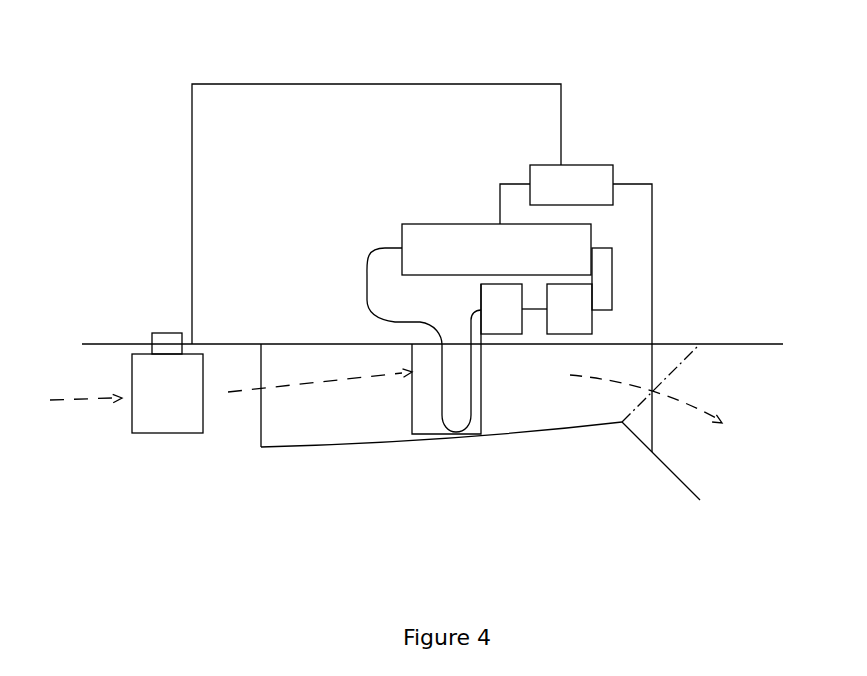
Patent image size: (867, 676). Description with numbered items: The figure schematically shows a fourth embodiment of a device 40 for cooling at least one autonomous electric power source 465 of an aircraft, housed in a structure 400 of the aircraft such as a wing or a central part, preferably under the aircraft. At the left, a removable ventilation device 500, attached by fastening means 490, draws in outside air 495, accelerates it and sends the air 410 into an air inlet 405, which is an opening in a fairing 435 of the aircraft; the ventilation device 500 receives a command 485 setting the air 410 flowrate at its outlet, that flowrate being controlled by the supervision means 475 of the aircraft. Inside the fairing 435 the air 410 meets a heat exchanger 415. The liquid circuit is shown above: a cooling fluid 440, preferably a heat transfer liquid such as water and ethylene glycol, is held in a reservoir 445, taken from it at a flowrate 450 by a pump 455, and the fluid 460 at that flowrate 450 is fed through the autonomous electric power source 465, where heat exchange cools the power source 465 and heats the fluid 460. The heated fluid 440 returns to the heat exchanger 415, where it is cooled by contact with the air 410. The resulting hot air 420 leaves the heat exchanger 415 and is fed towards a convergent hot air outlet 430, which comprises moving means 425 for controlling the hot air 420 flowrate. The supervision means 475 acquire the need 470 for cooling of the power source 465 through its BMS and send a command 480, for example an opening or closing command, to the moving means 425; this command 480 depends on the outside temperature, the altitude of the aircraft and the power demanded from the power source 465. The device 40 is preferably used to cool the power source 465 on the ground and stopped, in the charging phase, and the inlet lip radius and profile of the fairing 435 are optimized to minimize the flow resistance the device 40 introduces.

The cooling device 40 is at (162, 78).
The structure 400 is at (102, 343).
The air inlet 405 is at (260, 433).
The air 410 is at (302, 378).
The heat exchanger 415 is at (428, 424).
The hot air 420 is at (700, 410).
The moving means for controlling the air flowrate 425 is at (638, 442).
The hot air outlet 430 is at (692, 350).
The fairing 435 is at (347, 445).
The cooling fluid 440 is at (470, 437).
The fluid reservoir 445 is at (487, 317).
The flowrate 450 is at (532, 310).
The pump 455 is at (582, 323).
The fluid 460 is at (613, 263).
The autonomous electric power source 465 is at (413, 245).
The need for cooling 470 is at (520, 182).
The supervision means 475 is at (572, 180).
The command 480 is at (632, 180).
The command for the air flowrate 485 is at (355, 85).
The fastening means 490 is at (165, 343).
The drawn-in air 495 is at (92, 403).
The removable ventilation device 500 is at (155, 417).